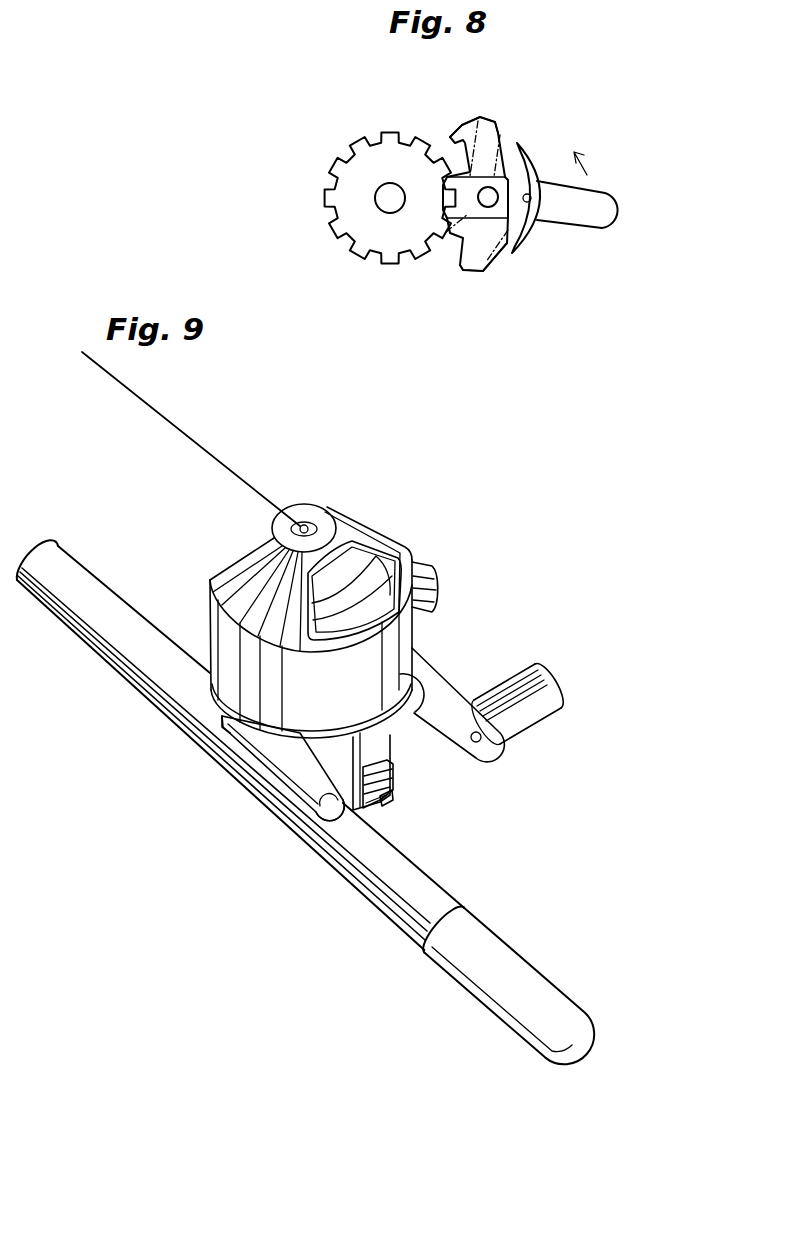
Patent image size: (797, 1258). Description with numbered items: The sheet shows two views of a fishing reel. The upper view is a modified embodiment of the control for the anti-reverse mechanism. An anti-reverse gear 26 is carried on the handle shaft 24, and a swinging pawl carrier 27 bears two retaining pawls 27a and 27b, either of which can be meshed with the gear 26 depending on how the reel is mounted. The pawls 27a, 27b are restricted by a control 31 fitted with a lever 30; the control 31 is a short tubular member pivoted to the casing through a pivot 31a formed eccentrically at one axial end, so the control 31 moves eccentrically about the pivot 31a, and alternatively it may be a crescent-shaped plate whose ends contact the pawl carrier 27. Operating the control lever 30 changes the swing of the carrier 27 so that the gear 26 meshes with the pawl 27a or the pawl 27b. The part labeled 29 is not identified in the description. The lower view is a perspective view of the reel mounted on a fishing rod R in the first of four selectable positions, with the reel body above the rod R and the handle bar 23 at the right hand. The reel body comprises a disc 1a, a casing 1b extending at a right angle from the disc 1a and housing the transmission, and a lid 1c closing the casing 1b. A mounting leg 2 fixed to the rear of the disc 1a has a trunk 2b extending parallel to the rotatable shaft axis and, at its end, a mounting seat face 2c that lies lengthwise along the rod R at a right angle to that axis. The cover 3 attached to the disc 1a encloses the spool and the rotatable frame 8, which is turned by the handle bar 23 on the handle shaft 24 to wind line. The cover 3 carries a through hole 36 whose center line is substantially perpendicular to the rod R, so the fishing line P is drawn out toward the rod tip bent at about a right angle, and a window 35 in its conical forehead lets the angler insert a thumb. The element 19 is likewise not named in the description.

In FIG. 8, the handle shaft 24 is at (382, 200).
In FIG. 8, the anti-reverse gear 26 is at (378, 243).
In FIG. 8, the pawl carrier 27 is at (498, 132).
In FIG. 8, the retaining pawl 27a is at (457, 137).
In FIG. 8, the retaining pawl 27b is at (460, 271).
In FIG. 8, the pivot pin 29 is at (490, 200).
In FIG. 8, the control lever 30 is at (593, 193).
In FIG. 9, the control lever 30 is at (392, 803).
In FIG. 8, the control 31 is at (530, 147).
In FIG. 8, the pivot 31a is at (530, 201).
In FIG. 9, the fishing line P is at (208, 448).
In FIG. 9, the fishing rod R is at (422, 877).
In FIG. 9, the cover 3 is at (357, 540).
In FIG. 9, the through hole 36 is at (313, 523).
In FIG. 9, the window opening 19 is at (388, 543).
In FIG. 9, the rotatable frame 8 is at (420, 567).
In FIG. 9, the window 35 is at (378, 597).
In FIG. 9, the disc 1a is at (453, 702).
In FIG. 9, the handle bar 23 is at (490, 683).
In FIG. 9, the mounting leg 2 is at (298, 780).
In FIG. 9, the trunk 2b is at (265, 743).
In FIG. 9, the mounting seat face 2c is at (307, 812).
In FIG. 9, the lid 1c is at (338, 753).
In FIG. 9, the casing 1b is at (395, 781).